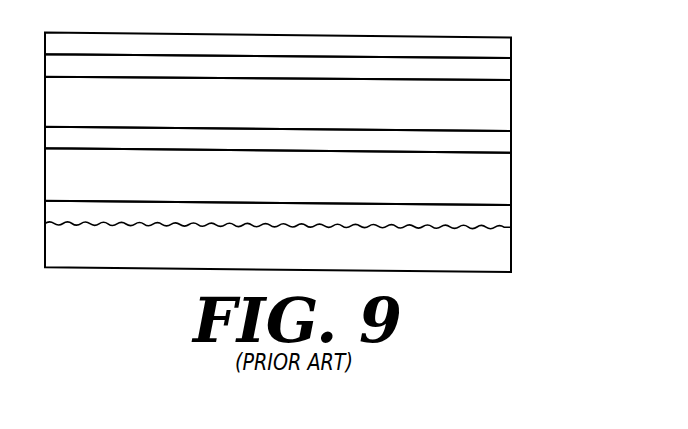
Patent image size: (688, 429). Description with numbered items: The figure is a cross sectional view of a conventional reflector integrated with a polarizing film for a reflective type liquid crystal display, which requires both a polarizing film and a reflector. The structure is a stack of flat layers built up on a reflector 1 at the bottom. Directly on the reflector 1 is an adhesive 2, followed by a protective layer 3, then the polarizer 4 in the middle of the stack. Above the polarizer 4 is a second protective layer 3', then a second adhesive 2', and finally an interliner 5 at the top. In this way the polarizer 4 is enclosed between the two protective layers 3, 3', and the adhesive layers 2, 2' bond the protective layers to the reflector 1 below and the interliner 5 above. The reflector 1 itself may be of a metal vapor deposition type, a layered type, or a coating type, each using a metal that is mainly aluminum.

The reflector 1 is at (511, 251).
The adhesive 2 is at (311, 219).
The protective layer 3 is at (311, 176).
The polarizer 4 is at (511, 145).
The protective layer 3' is at (315, 104).
The adhesive 2' is at (315, 70).
The interliner 5 is at (511, 48).